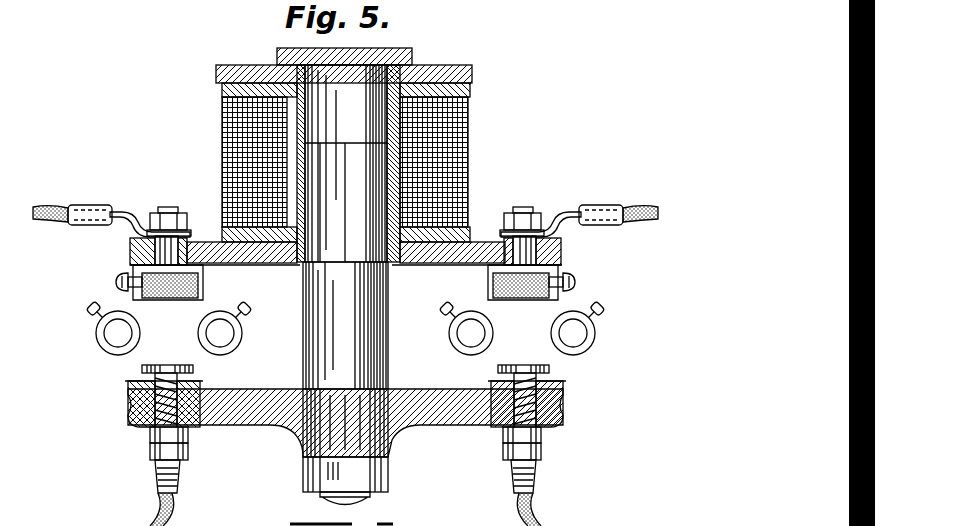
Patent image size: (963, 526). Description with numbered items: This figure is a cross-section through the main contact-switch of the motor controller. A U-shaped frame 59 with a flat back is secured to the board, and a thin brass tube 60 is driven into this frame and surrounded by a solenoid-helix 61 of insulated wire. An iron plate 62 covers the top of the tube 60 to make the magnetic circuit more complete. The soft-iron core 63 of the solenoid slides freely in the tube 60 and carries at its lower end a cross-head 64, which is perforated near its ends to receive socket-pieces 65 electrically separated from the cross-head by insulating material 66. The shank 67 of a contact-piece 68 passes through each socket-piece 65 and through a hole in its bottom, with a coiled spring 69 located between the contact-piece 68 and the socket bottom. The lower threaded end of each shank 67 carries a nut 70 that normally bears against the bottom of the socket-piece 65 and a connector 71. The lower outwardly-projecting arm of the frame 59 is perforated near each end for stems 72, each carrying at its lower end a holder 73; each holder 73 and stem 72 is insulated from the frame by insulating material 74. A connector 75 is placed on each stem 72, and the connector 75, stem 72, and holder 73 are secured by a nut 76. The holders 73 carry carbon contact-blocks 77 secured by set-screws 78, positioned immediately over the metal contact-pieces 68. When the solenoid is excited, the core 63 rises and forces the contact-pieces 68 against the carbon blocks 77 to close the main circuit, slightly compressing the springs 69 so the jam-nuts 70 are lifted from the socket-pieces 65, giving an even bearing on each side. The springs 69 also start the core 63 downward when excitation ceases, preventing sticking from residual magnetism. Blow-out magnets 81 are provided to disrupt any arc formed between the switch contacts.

The U-shaped frame 59 is at (472, 72).
The brass tube 60 is at (391, 264).
The solenoid-helix 61 is at (219, 135).
The iron plate 62 is at (412, 50).
The soft-iron core 63 is at (303, 322).
The cross-head 64 is at (345, 410).
The socket-piece 65 is at (128, 383).
The insulating material 66 is at (140, 400).
The shank 67 is at (180, 382).
The contact-piece 68 is at (142, 369).
The coiled spring 69 is at (150, 432).
The nut 70 is at (188, 440).
The connector 71 is at (182, 478).
The stem 72 is at (135, 257).
The holder 73 is at (202, 272).
The insulating material 74 is at (135, 238).
The connector 75 is at (345, 201).
The nut 76 is at (174, 212).
The carbon contact-block 77 is at (172, 300).
The set-screw 78 is at (117, 284).
The blow-out magnet 81 is at (197, 335).